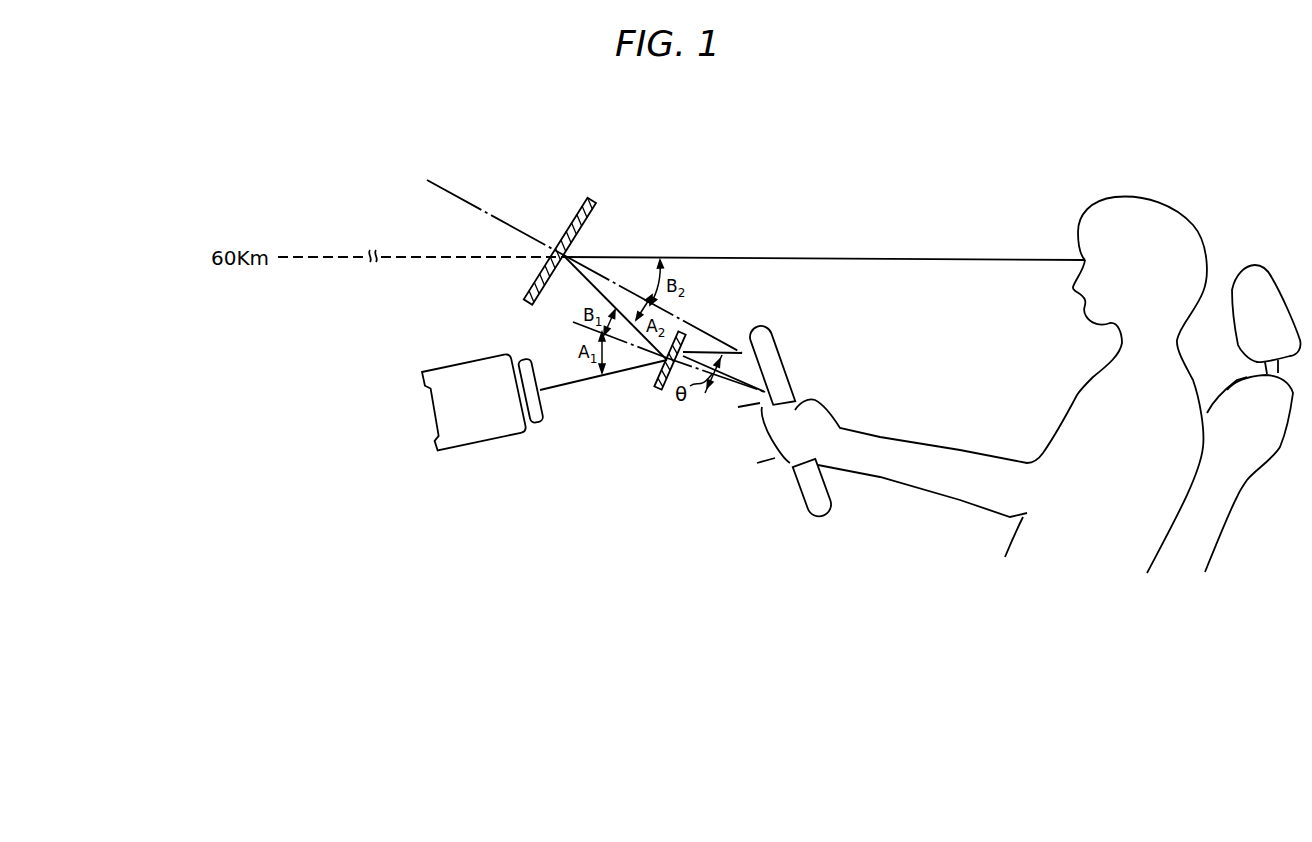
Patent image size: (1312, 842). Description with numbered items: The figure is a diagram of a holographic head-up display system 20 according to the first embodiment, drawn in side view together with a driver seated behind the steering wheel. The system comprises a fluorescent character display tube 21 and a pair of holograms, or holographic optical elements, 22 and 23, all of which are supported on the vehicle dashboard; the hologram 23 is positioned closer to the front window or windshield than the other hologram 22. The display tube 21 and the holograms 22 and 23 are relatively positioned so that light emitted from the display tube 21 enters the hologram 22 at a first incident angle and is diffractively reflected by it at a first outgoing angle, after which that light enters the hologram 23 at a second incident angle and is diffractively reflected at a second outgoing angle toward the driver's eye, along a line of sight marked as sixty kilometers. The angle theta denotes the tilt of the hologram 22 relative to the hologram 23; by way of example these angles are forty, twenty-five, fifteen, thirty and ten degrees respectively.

The holographic head-up display system 20 is at (718, 216).
The fluorescent character display tube 21 is at (483, 432).
The hologram 22 is at (660, 391).
The hologram 23 is at (596, 203).